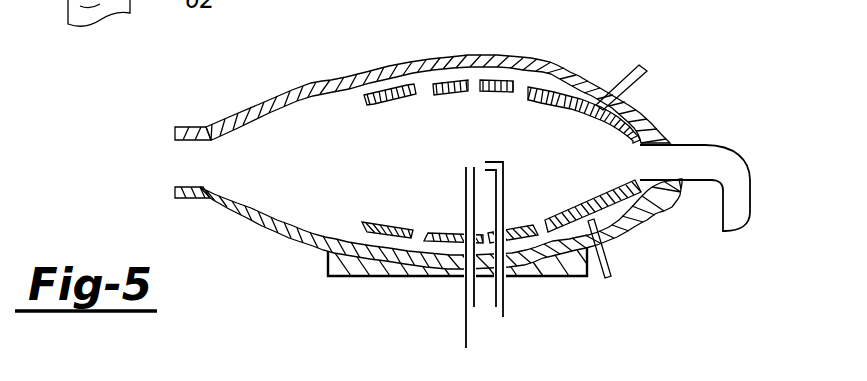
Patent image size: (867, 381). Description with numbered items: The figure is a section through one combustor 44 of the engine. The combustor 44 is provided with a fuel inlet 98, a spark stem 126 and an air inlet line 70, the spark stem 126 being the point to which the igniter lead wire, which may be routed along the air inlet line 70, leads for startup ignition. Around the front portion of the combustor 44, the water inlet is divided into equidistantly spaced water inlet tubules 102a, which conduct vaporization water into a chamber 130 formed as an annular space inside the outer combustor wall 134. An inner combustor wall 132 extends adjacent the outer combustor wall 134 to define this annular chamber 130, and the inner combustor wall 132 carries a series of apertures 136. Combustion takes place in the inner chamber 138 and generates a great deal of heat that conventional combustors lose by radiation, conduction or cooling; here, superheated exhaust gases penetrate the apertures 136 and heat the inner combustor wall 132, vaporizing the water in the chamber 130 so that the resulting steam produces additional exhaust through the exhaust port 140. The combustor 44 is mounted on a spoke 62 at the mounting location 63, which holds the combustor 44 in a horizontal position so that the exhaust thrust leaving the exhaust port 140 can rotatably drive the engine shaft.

The combustor 44 is at (428, 143).
The exhaust port 140 is at (187, 141).
The outer combustor wall 134 is at (302, 90).
The inner combustor wall 132 is at (387, 97).
The chamber 130 is at (452, 72).
The apertures 136 is at (521, 92).
The inner chamber 138 is at (430, 166).
The water inlet tubules 102a is at (633, 67).
The air inlet line 70 is at (710, 145).
The spokes 62 is at (353, 266).
The mounting location 63 is at (337, 250).
The spark stem 126 is at (466, 308).
The fuel inlet 98 is at (504, 306).